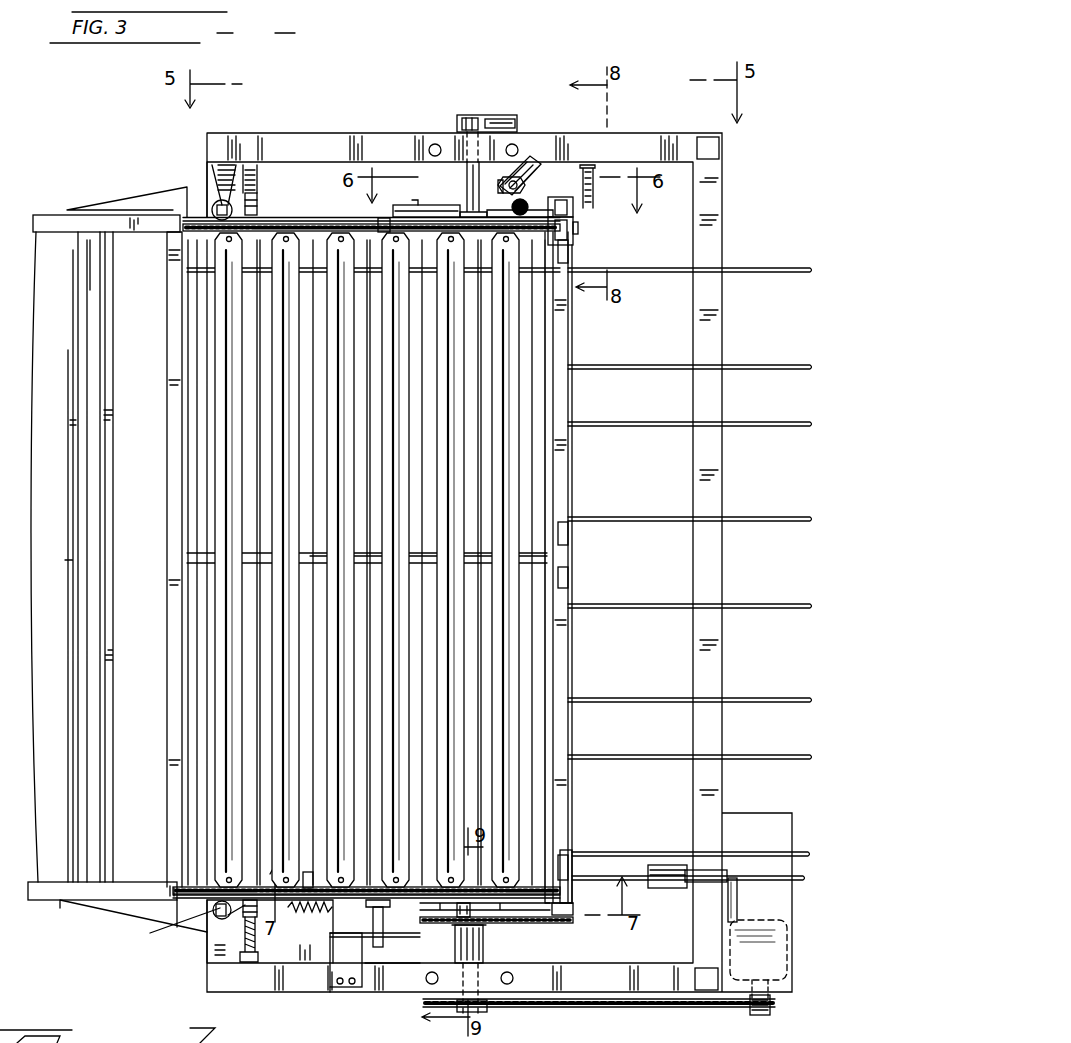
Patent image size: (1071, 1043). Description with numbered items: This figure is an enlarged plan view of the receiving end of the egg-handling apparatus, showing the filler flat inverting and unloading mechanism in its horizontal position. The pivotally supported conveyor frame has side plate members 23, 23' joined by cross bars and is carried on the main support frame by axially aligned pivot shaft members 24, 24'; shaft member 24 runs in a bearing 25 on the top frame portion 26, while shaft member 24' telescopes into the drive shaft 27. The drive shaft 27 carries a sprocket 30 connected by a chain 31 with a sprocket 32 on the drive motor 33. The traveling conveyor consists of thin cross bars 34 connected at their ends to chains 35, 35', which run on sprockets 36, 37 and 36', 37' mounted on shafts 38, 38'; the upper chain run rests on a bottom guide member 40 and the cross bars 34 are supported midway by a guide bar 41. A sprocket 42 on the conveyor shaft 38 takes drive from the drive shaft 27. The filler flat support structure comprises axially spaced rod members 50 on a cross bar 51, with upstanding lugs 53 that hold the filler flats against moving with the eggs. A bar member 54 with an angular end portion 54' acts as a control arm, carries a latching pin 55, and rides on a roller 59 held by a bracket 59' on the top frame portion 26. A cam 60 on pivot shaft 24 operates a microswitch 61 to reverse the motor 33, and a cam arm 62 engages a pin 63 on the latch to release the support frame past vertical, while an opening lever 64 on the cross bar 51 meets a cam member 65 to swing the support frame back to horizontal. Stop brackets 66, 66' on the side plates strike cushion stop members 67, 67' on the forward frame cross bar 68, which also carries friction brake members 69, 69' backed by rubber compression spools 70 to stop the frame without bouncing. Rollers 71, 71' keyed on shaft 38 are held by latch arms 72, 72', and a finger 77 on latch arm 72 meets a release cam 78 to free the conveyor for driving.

The side plate member 23 is at (371, 204).
The side plate member 23' is at (366, 919).
The pivot shaft member 24 is at (461, 189).
The pivot shaft member 24' is at (491, 929).
The bearing 25 is at (460, 148).
The top frame portion 26 is at (640, 150).
The drive shaft 27 is at (455, 935).
The sprocket 30 is at (488, 1012).
The chain 31 is at (580, 1010).
The sprocket 32 is at (760, 1016).
The drive motor 33 is at (778, 958).
The cross bars 34 is at (322, 703).
The chain 35 is at (386, 206).
The chain 35' is at (310, 853).
The sprocket 36 is at (573, 239).
The sprocket 36' is at (588, 863).
The sprocket 37 is at (109, 528).
The sprocket 37' is at (117, 888).
The conveyor shaft 38 is at (579, 565).
The shaft 38' is at (164, 559).
The bottom guide member 40 is at (318, 240).
The support or guide bar 41 is at (368, 556).
The sprocket 42 is at (556, 925).
The rod members 50 is at (784, 274).
The cross bar 51 is at (560, 347).
The upstanding fingers or lugs 53 is at (562, 258).
The bar member 54 is at (705, 871).
The angular end portion 54' is at (705, 841).
The latching pin 55 is at (740, 904).
The roller 59 is at (671, 856).
The bracket 59' is at (679, 844).
The cam 60 is at (472, 118).
The microswitch 61 is at (500, 119).
The cam arm 62 is at (340, 932).
The pin 63 is at (388, 960).
The opening lever 64 is at (565, 200).
The cam member 65 is at (594, 192).
The stop bracket 66 is at (225, 179).
The stop bracket 66' is at (178, 925).
The cushion stop member 67 is at (200, 172).
The cushion stop member 67' is at (197, 930).
The forward frame cross bar 68 is at (210, 200).
The friction brake member 69 is at (265, 199).
The friction brake member 69' is at (257, 868).
The rubber compression spool 70 is at (258, 178).
The roller 71 is at (601, 220).
The roller 71' is at (582, 903).
The latch arm 72 is at (473, 198).
The latch arm 72' is at (390, 923).
The finger 77 is at (520, 200).
The release cam 78 is at (535, 168).